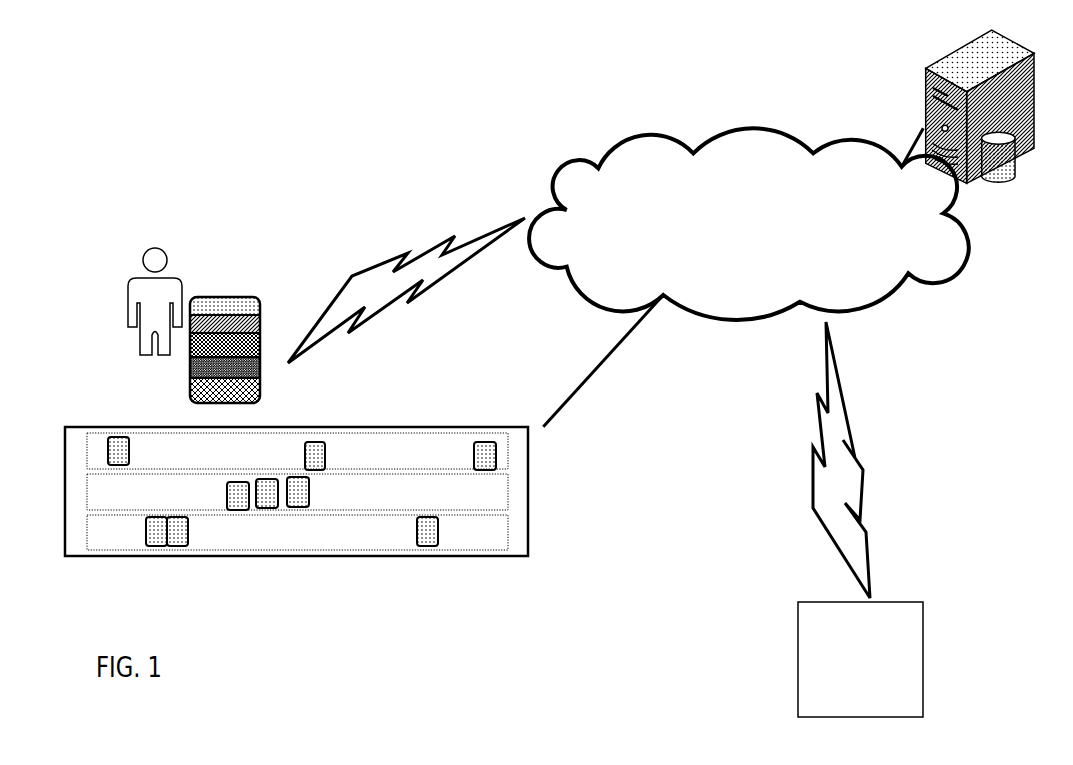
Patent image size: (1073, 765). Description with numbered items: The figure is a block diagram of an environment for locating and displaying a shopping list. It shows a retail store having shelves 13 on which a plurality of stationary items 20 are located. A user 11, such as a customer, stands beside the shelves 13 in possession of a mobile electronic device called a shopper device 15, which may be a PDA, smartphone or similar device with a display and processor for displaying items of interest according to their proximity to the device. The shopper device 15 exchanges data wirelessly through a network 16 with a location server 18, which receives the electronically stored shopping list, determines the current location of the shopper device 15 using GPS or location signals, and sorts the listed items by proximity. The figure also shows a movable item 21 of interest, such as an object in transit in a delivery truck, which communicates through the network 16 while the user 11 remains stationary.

The user 11 is at (172, 277).
The shopper device 15 is at (238, 295).
The network 16 is at (765, 246).
The location server 18 is at (925, 75).
The shelves 13 is at (455, 427).
The items 20 is at (317, 432).
The movable item of interest 21 is at (873, 708).